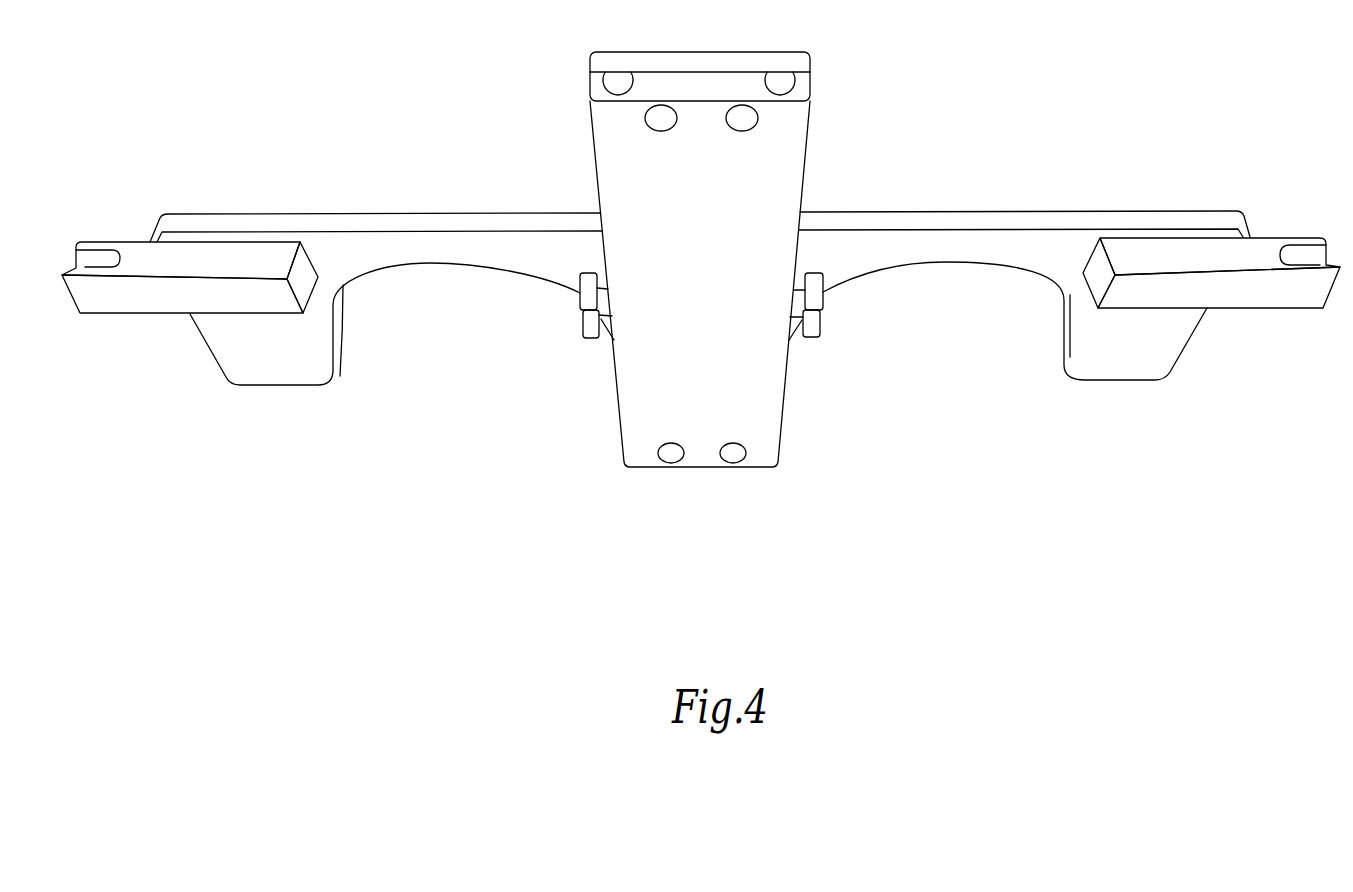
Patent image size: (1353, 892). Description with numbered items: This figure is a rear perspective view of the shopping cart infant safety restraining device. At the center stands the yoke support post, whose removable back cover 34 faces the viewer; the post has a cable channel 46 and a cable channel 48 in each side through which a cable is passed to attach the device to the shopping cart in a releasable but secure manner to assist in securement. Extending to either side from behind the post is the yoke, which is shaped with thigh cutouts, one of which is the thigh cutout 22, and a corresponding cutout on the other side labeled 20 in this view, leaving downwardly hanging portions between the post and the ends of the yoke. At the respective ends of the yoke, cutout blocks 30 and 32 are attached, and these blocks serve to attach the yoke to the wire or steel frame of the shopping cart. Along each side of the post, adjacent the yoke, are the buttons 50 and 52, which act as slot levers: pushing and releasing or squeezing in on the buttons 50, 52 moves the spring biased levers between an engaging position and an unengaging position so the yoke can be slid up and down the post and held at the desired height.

The right hanger bracket 20 is at (1020, 290).
The thigh cutout 22 is at (393, 290).
The cutout block 30 is at (1258, 248).
The cutout block 32 is at (137, 258).
The back cover 34 is at (620, 148).
The cable channel 46 is at (783, 77).
The cable channel 48 is at (607, 73).
The button 50 is at (580, 278).
The button 52 is at (815, 277).